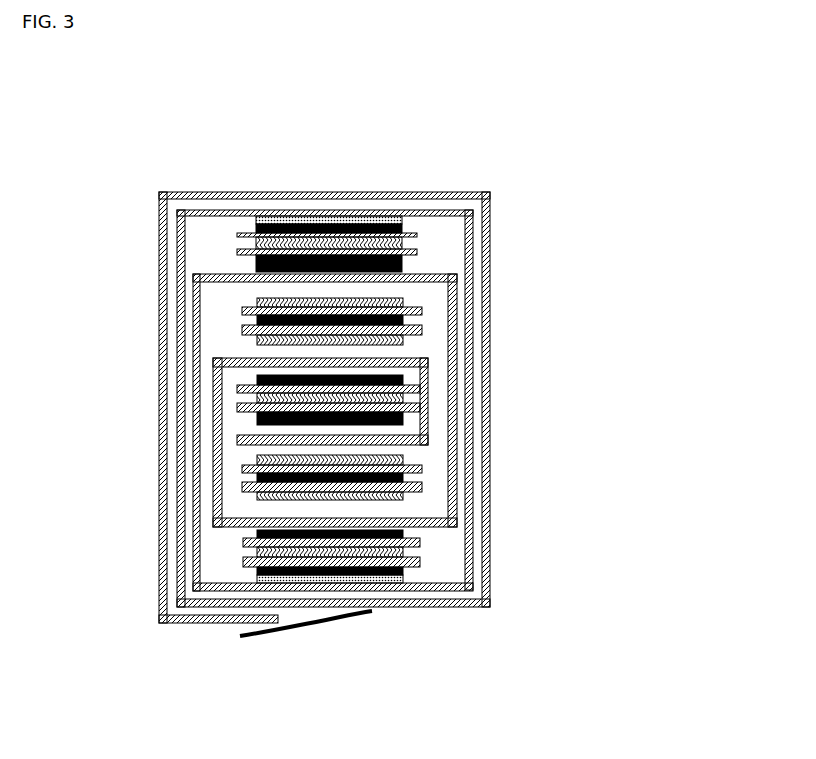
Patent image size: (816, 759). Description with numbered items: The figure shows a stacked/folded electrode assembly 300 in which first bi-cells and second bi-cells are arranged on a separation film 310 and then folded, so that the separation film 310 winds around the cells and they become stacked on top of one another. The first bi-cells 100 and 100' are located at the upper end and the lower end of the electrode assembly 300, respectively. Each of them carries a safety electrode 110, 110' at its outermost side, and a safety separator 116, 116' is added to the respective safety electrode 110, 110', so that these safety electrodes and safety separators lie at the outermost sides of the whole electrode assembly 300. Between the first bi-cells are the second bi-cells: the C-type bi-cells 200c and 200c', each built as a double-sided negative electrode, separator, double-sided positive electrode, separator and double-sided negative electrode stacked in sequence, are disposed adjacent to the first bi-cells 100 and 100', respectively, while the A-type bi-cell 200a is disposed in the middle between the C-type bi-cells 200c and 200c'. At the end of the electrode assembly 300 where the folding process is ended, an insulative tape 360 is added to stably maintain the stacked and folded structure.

The electrode assembly 300 is at (50, 140).
The separation film 310 is at (467, 608).
The safety separator 116 is at (329, 157).
The safety separator 116' is at (262, 595).
The first bi-cell 100 is at (361, 242).
The first bi-cell 100' is at (444, 594).
The safety electrode 110 is at (243, 235).
The safety electrode 110' is at (361, 617).
The second bi-cell 200c is at (445, 319).
The second bi-cell 200a is at (415, 393).
The second bi-cell 200c' is at (447, 474).
The insulative tape 360 is at (283, 633).